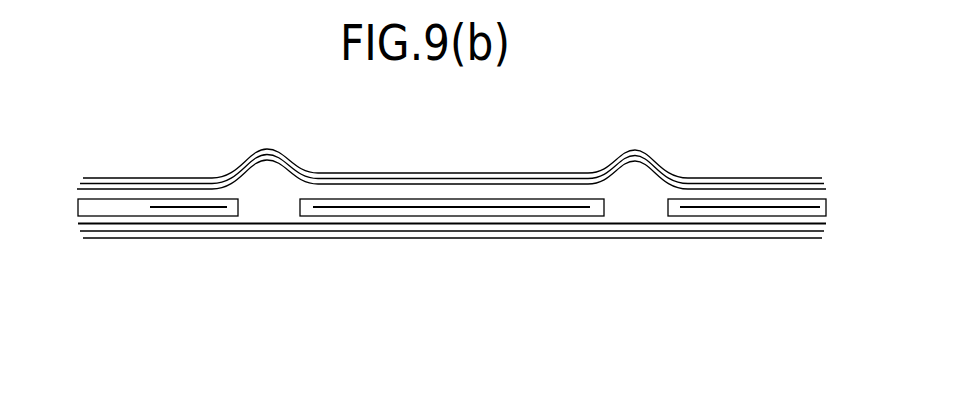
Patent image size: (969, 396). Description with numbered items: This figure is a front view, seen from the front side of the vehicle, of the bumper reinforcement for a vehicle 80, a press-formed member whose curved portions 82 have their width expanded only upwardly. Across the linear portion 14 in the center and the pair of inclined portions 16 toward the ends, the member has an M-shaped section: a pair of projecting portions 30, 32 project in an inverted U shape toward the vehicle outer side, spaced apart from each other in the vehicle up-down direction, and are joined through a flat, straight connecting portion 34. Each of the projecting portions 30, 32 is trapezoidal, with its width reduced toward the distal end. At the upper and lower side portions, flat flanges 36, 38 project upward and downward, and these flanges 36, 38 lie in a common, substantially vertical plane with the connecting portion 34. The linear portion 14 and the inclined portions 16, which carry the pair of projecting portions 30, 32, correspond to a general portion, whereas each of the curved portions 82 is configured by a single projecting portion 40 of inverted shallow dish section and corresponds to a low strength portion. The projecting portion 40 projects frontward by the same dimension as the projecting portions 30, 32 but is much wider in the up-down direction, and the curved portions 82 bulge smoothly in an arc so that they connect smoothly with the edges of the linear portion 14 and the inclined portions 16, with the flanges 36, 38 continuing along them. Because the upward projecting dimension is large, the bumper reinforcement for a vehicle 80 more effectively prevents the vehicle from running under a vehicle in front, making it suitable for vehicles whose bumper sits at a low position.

The linear portion 14 is at (490, 160).
The inclined portions 16 is at (131, 158).
The projecting portion 30 is at (172, 190).
The projecting portion 32 is at (112, 230).
The connecting portion 34 is at (163, 208).
The flange 36 is at (369, 183).
The flange 38 is at (372, 233).
The projecting portion 40 is at (270, 173).
The bumper reinforcement for a vehicle 80 is at (378, 318).
The curved portions 82 is at (655, 140).